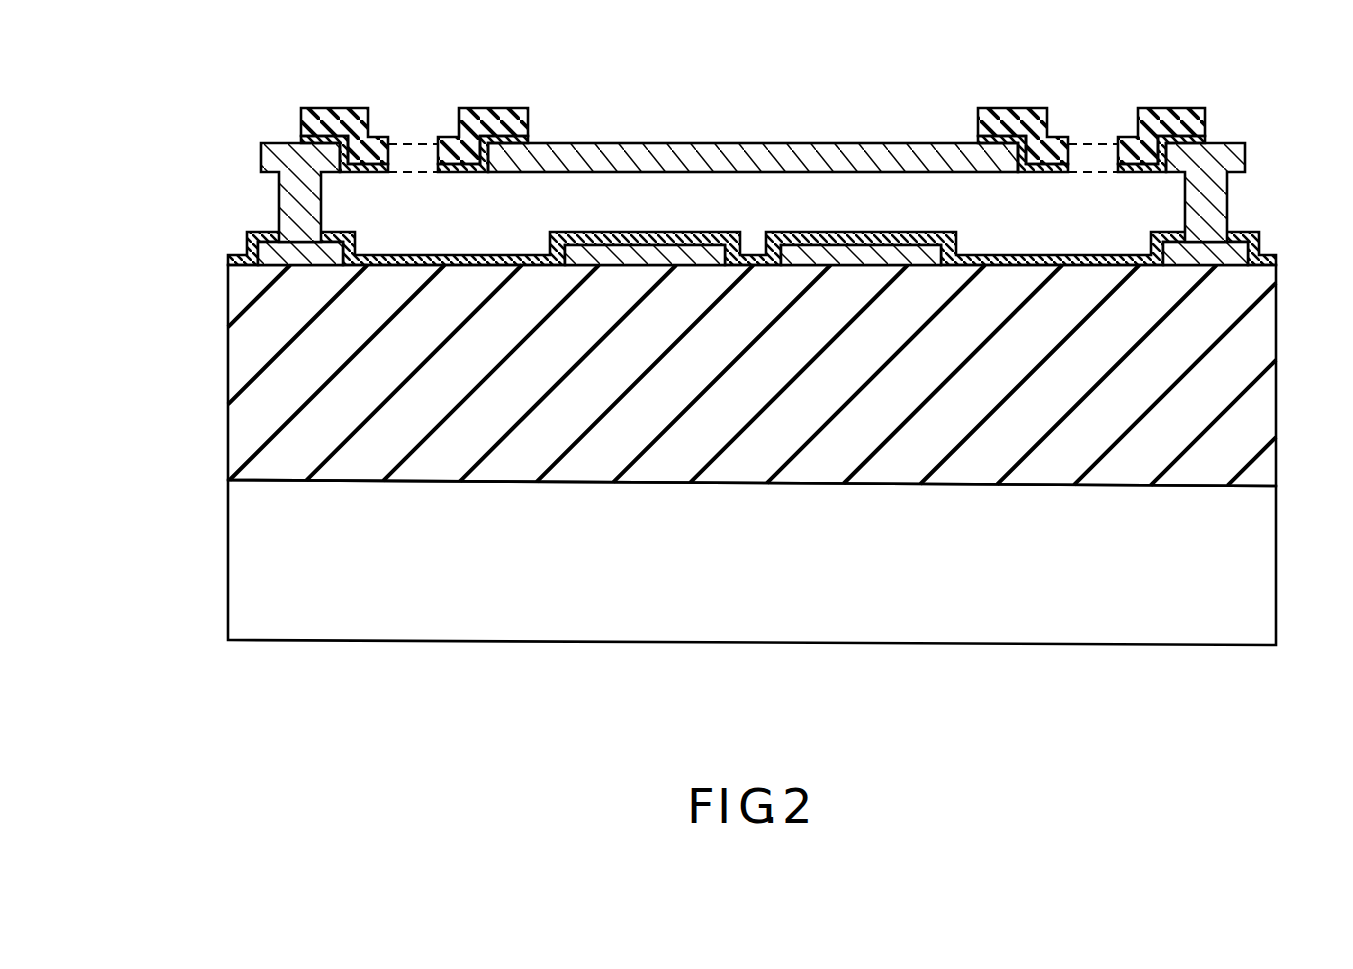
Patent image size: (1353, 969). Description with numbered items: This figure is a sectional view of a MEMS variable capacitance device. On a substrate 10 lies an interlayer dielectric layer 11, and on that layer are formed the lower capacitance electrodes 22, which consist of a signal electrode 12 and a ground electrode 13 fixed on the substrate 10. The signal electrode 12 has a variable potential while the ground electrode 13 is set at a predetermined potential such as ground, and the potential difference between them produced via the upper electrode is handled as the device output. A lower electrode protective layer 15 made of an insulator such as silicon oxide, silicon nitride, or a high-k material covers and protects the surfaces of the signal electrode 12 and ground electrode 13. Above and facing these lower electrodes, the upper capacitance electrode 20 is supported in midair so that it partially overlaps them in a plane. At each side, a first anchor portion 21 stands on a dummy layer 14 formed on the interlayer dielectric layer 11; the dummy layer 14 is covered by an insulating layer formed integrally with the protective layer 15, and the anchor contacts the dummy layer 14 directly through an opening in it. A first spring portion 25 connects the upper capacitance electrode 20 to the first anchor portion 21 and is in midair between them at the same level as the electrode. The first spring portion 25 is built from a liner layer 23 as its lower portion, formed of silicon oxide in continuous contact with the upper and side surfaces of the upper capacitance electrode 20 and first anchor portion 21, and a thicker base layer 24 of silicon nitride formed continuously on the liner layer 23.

The substrate 10 is at (1268, 551).
The interlayer dielectric layer 11 is at (1268, 400).
The signal electrode 12 is at (650, 258).
The ground electrode 13 is at (862, 258).
The dummy layer 14 is at (300, 258).
The lower electrode protective layer 15 is at (1258, 236).
The upper capacitance electrode 20 is at (795, 156).
The first anchor portion 21 is at (290, 205).
The lower capacitance electrodes 22 is at (753, 494).
The liner layer 23 is at (300, 138).
The base layer 24 is at (300, 128).
The first spring portion 25 is at (752, 126).